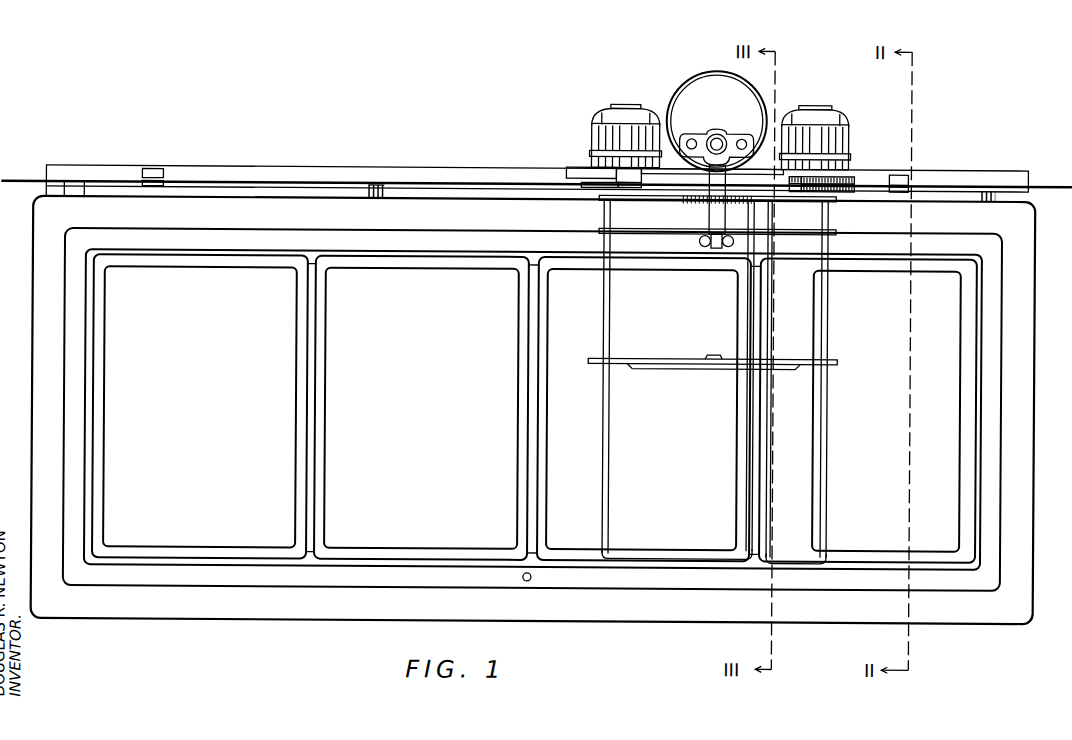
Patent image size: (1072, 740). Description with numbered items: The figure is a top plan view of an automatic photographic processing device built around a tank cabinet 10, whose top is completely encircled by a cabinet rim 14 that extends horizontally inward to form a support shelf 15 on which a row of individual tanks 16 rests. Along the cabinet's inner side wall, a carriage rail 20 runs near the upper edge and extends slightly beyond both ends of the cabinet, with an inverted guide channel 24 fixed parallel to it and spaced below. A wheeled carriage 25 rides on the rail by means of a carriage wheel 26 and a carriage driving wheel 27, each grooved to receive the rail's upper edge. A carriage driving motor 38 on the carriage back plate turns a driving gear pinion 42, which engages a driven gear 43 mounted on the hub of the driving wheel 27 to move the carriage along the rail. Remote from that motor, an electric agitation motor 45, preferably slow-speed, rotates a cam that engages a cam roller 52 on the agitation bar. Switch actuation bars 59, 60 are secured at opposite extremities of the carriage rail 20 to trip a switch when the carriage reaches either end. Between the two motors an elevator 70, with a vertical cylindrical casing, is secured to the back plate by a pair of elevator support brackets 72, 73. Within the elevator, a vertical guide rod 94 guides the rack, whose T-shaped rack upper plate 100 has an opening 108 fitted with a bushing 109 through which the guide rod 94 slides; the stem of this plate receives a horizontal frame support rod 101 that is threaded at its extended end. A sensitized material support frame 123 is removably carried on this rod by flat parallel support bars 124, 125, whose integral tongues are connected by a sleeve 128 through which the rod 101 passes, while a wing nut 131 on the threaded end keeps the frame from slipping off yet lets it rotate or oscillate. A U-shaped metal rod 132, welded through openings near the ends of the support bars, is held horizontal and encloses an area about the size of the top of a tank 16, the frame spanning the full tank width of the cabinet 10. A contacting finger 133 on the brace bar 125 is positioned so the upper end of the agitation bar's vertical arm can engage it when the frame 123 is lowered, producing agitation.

The cabinet 10 is at (243, 626).
The cabinet rim 14 is at (150, 604).
The support shelf 15 is at (312, 256).
The individual tanks 16 is at (222, 391).
The carriage rail 20 is at (212, 185).
The inverted guide channel 24 is at (392, 164).
The wheeled carriage 25 is at (585, 165).
The carriage wheel 26 is at (596, 186).
The carriage driving wheel 27 is at (852, 190).
The carriage driving motor 38 is at (838, 107).
The driving gear pinion 42 is at (788, 180).
The driven gear 43 is at (850, 176).
The electric agitation motor 45 is at (606, 120).
The cam roller 52 is at (655, 180).
The switch actuation bar 59 is at (905, 180).
The switch actuation bar 60 is at (150, 172).
The elevator 70 is at (672, 82).
The elevator support bracket 72 is at (790, 150).
The elevator support bracket 73 is at (650, 148).
The vertical elevator rack guide rod 94 is at (716, 133).
The rack upper plate 100 is at (694, 138).
The frame support rod 101 is at (712, 168).
The opening 108 is at (709, 130).
The bushing 109 is at (742, 138).
The sensitized material support frame 123 is at (830, 292).
The support bar 124 is at (658, 234).
The support bar 125 is at (793, 199).
The sleeve 128 is at (723, 247).
The wing nut 131 is at (706, 247).
The U-shaped metal rod 132 is at (612, 411).
The contacting finger 133 is at (628, 190).